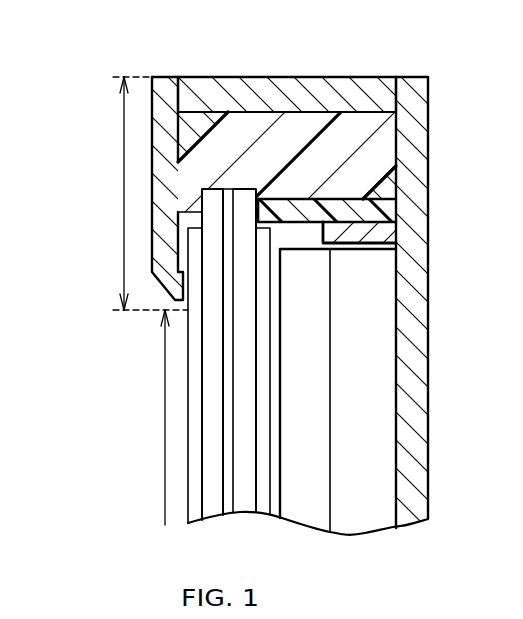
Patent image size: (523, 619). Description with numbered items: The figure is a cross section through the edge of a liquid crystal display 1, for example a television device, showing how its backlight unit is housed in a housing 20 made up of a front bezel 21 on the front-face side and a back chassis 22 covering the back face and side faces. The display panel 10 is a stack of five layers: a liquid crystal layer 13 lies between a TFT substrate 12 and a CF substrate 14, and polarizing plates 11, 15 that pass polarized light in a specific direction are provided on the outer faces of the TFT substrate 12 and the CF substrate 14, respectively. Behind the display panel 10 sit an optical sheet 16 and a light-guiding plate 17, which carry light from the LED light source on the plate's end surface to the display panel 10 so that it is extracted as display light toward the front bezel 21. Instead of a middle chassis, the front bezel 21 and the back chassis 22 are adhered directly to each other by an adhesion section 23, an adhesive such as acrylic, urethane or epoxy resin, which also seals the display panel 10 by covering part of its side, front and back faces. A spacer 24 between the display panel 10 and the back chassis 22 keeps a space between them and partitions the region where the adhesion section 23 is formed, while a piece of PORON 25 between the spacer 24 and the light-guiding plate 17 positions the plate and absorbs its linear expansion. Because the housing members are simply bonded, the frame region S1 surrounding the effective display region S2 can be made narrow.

The display 1 is at (440, 47).
The display panel 10 is at (94, 373).
The polarizing plate 11 is at (263, 493).
The TFT substrate 12 is at (243, 465).
The liquid crystal layer 13 is at (228, 440).
The CF substrate 14 is at (213, 413).
The polarizing plate 15 is at (197, 388).
The optical sheet 16 is at (303, 332).
The light-guiding plate 17 is at (377, 387).
The housing 20 is at (62, 85).
The front bezel 21 is at (160, 152).
The back chassis 22 is at (187, 97).
The adhesion section 23 is at (376, 166).
The spacer 24 is at (382, 208).
The piece of PORON 25 is at (377, 233).
The frame region S1 is at (124, 197).
The effective display region S2 is at (165, 345).